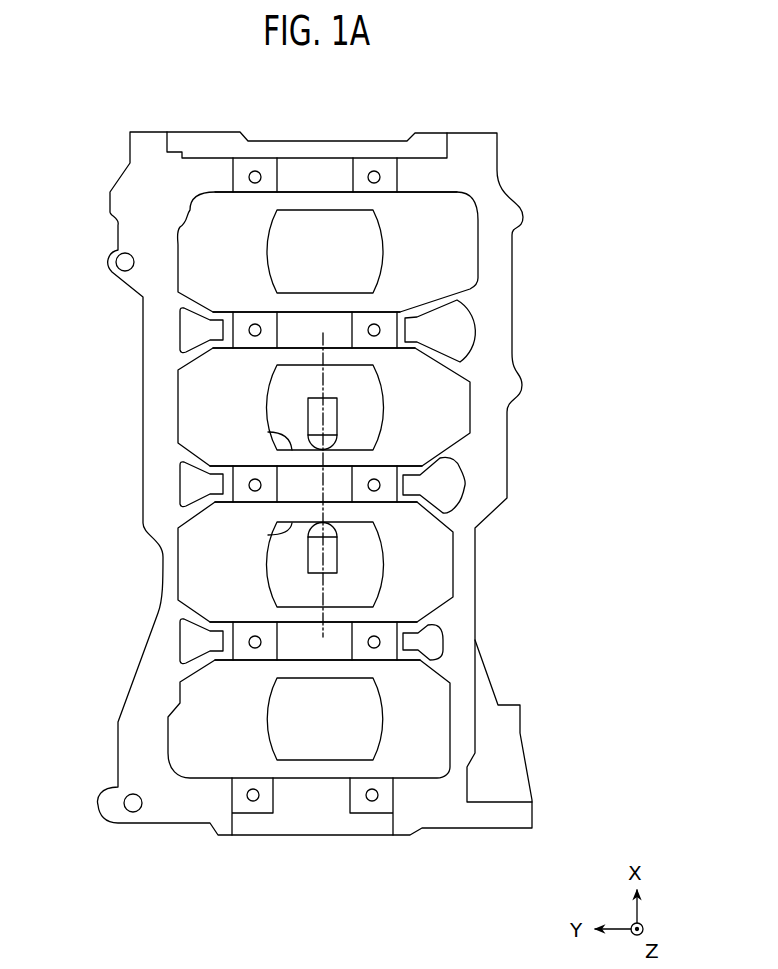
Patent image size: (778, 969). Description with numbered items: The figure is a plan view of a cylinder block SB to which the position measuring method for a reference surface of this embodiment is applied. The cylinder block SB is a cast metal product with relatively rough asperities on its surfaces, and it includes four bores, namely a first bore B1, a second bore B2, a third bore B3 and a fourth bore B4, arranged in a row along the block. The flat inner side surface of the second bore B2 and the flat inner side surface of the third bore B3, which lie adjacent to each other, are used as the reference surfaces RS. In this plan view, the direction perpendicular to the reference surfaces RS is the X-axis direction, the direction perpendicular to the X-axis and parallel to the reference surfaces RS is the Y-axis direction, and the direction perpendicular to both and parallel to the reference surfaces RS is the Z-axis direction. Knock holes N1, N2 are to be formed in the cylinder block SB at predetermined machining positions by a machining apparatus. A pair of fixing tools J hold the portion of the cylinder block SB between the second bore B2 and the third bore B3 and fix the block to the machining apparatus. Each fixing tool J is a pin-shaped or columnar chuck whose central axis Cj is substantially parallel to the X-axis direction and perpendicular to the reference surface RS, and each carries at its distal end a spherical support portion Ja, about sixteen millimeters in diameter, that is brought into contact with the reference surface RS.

The cylinder block SB is at (543, 110).
The knock hole N2 is at (122, 264).
The knock hole N1 is at (130, 803).
The fourth bore B4 is at (388, 250).
The third bore B3 is at (388, 410).
The second bore B2 is at (388, 555).
The first bore B1 is at (383, 690).
The fixing tool J is at (342, 397).
The support portion Ja is at (333, 443).
The reference surface RS is at (285, 440).
The central axis Cj is at (323, 615).